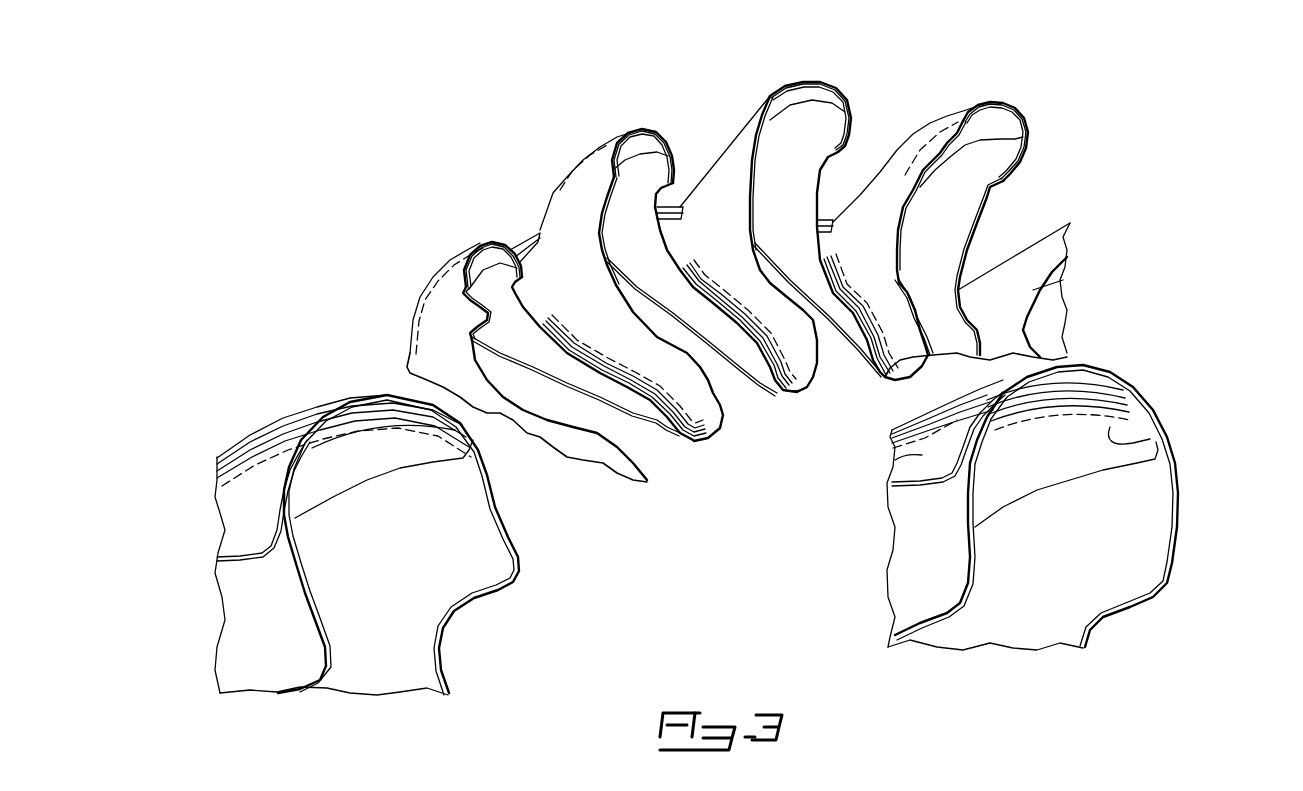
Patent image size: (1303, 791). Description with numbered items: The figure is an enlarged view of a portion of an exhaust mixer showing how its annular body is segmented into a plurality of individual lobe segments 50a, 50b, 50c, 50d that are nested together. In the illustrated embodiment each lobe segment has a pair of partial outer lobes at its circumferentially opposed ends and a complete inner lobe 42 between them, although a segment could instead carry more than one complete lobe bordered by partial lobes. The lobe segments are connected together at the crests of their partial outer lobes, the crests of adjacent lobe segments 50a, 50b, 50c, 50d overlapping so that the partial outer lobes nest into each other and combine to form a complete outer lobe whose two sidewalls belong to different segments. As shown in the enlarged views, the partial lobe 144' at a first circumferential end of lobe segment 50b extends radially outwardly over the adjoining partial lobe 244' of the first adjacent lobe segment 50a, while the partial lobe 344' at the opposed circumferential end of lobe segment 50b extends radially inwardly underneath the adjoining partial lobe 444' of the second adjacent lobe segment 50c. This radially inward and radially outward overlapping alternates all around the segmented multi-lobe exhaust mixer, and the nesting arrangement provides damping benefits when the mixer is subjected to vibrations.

The lobe segment 50a is at (516, 228).
The lobe segment 50b is at (689, 158).
The lobe segment 50c is at (890, 120).
The lobe segment 50d is at (1050, 190).
The complete inner lobe 42 is at (775, 402).
The partial lobe 144' is at (367, 536).
The partial lobe 244' is at (371, 386).
The partial lobe 344' is at (1195, 421).
The partial lobe 444' is at (973, 507).